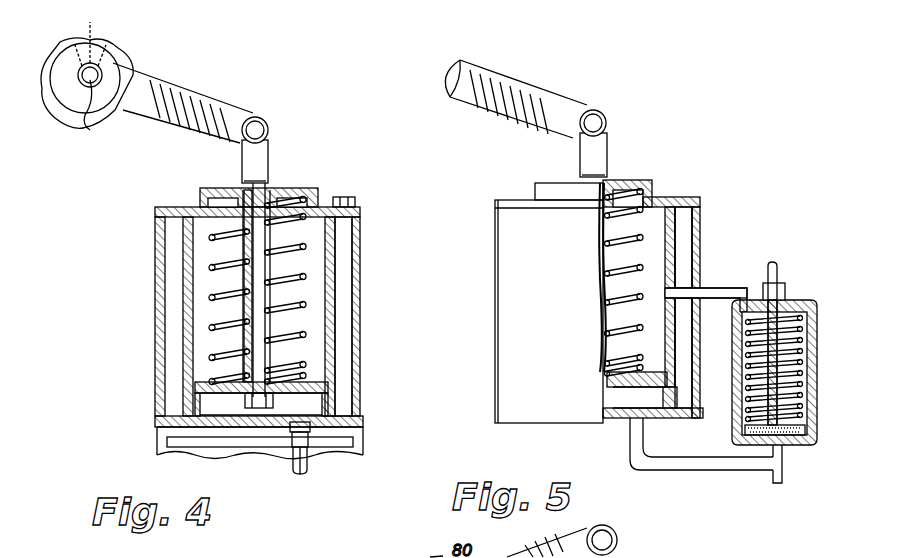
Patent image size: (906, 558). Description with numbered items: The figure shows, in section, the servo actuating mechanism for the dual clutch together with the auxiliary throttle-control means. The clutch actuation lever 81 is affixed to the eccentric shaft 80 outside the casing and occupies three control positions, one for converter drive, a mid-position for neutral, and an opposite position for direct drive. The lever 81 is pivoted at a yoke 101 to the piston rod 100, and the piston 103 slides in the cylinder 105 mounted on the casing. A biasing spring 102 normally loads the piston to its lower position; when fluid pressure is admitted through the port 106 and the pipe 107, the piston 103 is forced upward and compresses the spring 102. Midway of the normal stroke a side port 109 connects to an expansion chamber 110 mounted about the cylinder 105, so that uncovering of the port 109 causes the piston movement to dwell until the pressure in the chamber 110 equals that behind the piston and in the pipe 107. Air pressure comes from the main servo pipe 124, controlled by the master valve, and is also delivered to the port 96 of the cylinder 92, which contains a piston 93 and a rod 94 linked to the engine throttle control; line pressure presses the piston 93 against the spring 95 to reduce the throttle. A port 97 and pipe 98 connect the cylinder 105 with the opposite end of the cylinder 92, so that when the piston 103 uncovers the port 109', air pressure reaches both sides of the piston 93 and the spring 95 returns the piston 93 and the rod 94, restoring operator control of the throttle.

In FIG. 4, the eccentric shaft 80 is at (88, 130).
In FIG. 4, the clutch actuation lever 81 is at (188, 98).
In FIG. 5, the clutch actuation lever 81 is at (565, 92).
In FIG. 4, the yoke 101 is at (268, 155).
In FIG. 5, the yoke 101 is at (600, 150).
In FIG. 4, the piston rod 100 is at (258, 205).
In FIG. 5, the piston rod 100 is at (606, 182).
In FIG. 4, the biasing spring 102 is at (212, 230).
In FIG. 5, the biasing spring 102 is at (633, 195).
In FIG. 4, the cylinder 105 is at (190, 300).
In FIG. 5, the cylinder 105 is at (658, 215).
In FIG. 4, the expansion chamber 110 is at (348, 283).
In FIG. 5, the expansion chamber 110 is at (690, 232).
In FIG. 4, the side port 109 is at (368, 316).
In FIG. 5, the port 109' is at (657, 307).
In FIG. 4, the piston 103 is at (198, 398).
In FIG. 4, the port 106 is at (292, 427).
In FIG. 4, the pipe 107 is at (309, 462).
In FIG. 5, the pipe 107 is at (632, 438).
In FIG. 5, the pipe 98 is at (715, 278).
In FIG. 5, the port 97 is at (745, 303).
In FIG. 5, the rod 94 is at (778, 270).
In FIG. 5, the cylinder 92 is at (805, 312).
In FIG. 5, the spring 95 is at (752, 373).
In FIG. 5, the piston 93 is at (745, 430).
In FIG. 5, the port 96 is at (783, 452).
In FIG. 5, the main servo pipe 124 is at (770, 478).